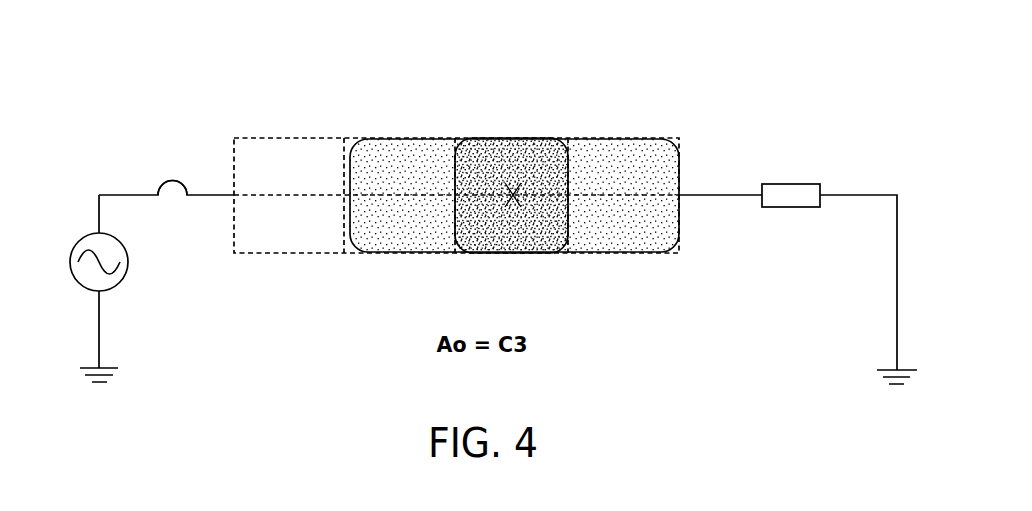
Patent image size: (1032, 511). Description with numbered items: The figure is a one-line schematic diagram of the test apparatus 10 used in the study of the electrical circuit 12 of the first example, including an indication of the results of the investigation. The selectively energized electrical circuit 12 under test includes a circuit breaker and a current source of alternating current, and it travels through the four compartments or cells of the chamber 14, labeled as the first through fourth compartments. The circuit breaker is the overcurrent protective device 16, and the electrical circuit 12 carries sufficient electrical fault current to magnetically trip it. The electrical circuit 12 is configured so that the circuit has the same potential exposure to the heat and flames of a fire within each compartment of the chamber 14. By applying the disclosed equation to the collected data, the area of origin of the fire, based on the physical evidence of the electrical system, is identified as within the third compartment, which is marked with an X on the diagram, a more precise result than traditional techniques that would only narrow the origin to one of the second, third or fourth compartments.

The test apparatus 10 is at (745, 76).
The electrical circuit 12 is at (89, 175).
The chamber 14 is at (234, 121).
The overcurrent protective device 16 is at (173, 200).